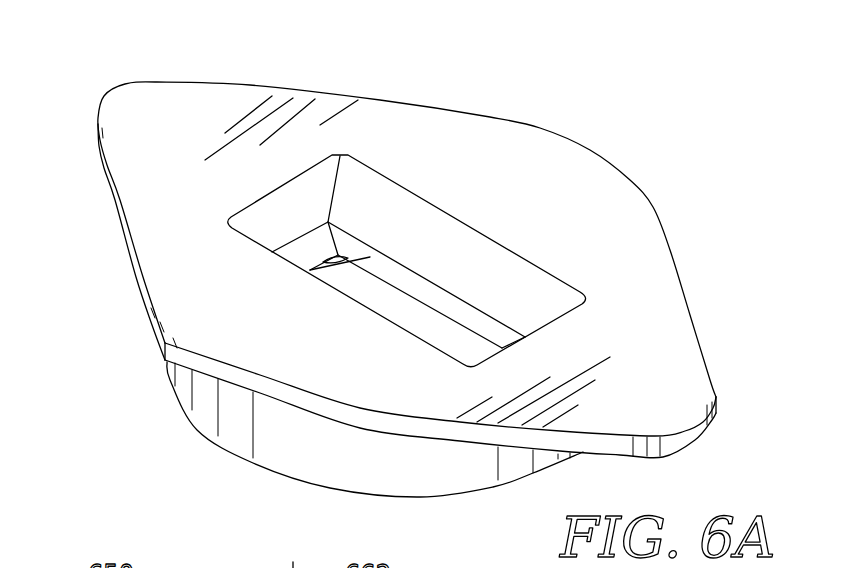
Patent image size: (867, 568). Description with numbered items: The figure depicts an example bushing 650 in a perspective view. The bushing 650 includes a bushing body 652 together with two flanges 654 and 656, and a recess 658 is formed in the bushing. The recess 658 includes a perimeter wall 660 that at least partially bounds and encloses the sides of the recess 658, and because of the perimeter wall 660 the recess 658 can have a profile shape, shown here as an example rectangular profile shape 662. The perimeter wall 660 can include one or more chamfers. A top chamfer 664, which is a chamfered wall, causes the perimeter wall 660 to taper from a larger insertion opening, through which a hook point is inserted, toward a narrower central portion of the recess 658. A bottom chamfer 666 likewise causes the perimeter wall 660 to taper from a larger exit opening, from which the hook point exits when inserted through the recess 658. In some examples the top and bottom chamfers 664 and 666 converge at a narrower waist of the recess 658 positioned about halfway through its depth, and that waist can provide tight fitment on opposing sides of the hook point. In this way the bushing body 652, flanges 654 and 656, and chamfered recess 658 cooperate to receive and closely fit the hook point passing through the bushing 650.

The bushing 650 is at (464, 86).
The bushing body 652 is at (207, 413).
The flange 654 is at (193, 108).
The flange 656 is at (680, 365).
The recess 658 is at (408, 310).
The perimeter wall 660 is at (326, 192).
The rectangular profile shape 662 is at (469, 262).
The top chamfer 664 is at (325, 262).
The bottom chamfer 666 is at (496, 304).